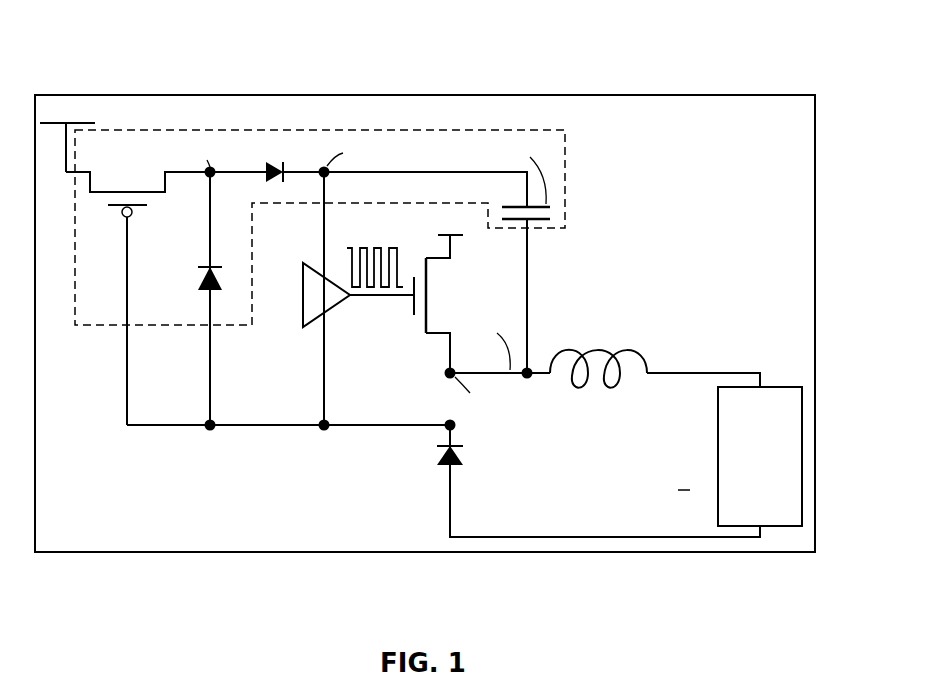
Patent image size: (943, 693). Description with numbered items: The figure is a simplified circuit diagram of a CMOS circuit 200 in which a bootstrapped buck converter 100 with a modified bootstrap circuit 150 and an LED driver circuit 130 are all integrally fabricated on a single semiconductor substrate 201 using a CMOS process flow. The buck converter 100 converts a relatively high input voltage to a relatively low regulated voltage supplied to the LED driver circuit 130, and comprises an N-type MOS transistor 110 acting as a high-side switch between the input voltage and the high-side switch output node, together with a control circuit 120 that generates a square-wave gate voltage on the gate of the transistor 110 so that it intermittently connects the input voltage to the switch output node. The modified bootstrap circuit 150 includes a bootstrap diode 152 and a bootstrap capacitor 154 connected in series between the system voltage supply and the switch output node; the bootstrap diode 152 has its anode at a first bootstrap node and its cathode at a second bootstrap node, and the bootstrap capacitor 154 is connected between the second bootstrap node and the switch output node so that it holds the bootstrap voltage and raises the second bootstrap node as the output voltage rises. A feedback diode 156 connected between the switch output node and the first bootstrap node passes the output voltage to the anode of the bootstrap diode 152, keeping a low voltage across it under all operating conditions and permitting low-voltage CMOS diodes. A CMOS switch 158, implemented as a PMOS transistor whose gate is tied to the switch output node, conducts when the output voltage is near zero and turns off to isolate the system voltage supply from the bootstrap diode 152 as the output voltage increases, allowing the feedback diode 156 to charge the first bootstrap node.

The CMOS circuit 200 is at (670, 81).
The semiconductor substrate 201 is at (425, 323).
The bootstrapped buck converter 100 is at (670, 241).
The N-type MOS transistor 110 is at (428, 283).
The control circuit 120 is at (302, 266).
The LED driver circuit 130 is at (760, 456).
The modified bootstrap circuit 150 is at (107, 328).
The bootstrap diode 152 is at (267, 162).
The bootstrap capacitor 154 is at (520, 204).
The feedback diode 156 is at (200, 282).
The CMOS switch 158 is at (165, 172).